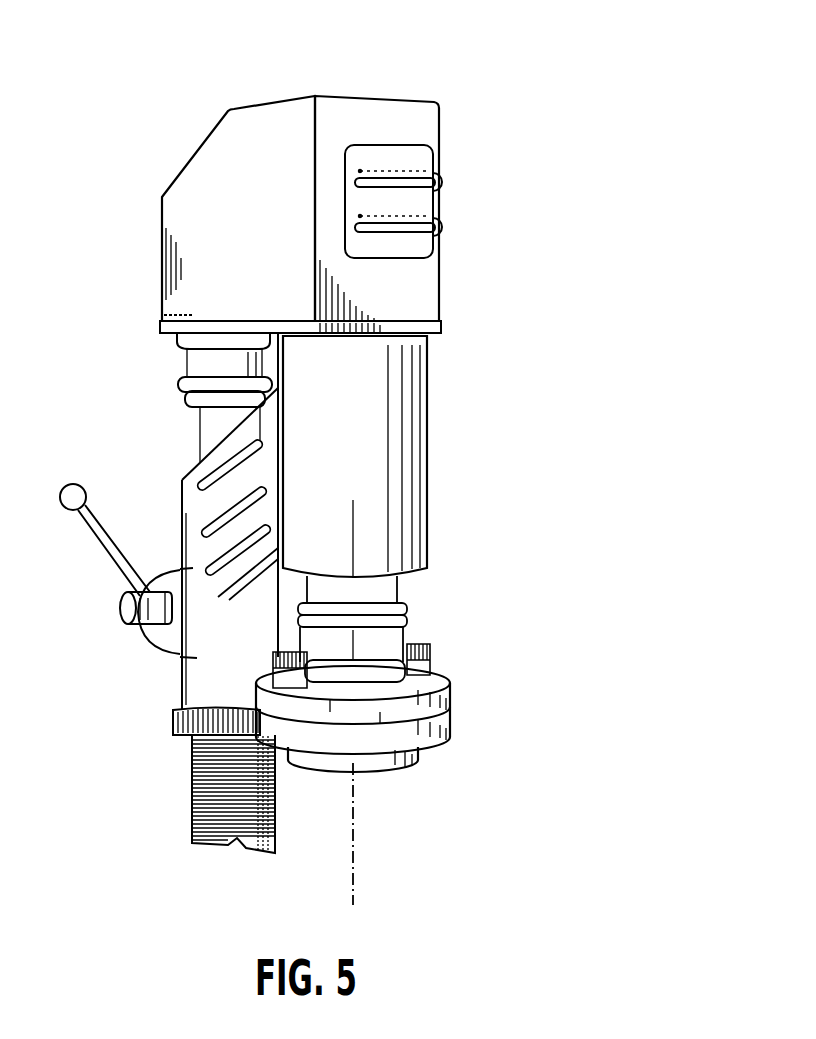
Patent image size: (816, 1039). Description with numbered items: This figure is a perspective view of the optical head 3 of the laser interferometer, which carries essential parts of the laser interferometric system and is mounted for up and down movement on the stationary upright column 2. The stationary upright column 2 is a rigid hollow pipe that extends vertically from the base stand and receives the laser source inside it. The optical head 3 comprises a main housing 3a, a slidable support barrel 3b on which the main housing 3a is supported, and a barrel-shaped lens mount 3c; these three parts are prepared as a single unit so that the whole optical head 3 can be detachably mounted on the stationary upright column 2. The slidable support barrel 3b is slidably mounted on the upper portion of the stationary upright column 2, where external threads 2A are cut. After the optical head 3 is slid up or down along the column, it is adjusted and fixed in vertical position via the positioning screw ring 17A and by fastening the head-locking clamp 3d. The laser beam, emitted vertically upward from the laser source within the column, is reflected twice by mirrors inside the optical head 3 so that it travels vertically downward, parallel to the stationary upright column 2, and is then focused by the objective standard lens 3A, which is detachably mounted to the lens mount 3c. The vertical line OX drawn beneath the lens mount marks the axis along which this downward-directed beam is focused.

The optical head 3 is at (408, 96).
The main housing 3a is at (257, 221).
The slidable support barrel 3b is at (183, 480).
The barrel-shaped lens mount 3c is at (428, 431).
The head-locking clamp 3d is at (92, 552).
The objective standard lens 3A is at (452, 707).
The positioning screw ring 17A is at (173, 716).
The stationary upright column 2 is at (162, 765).
The external threads 2A is at (193, 802).
The axis of rotation OX is at (355, 858).